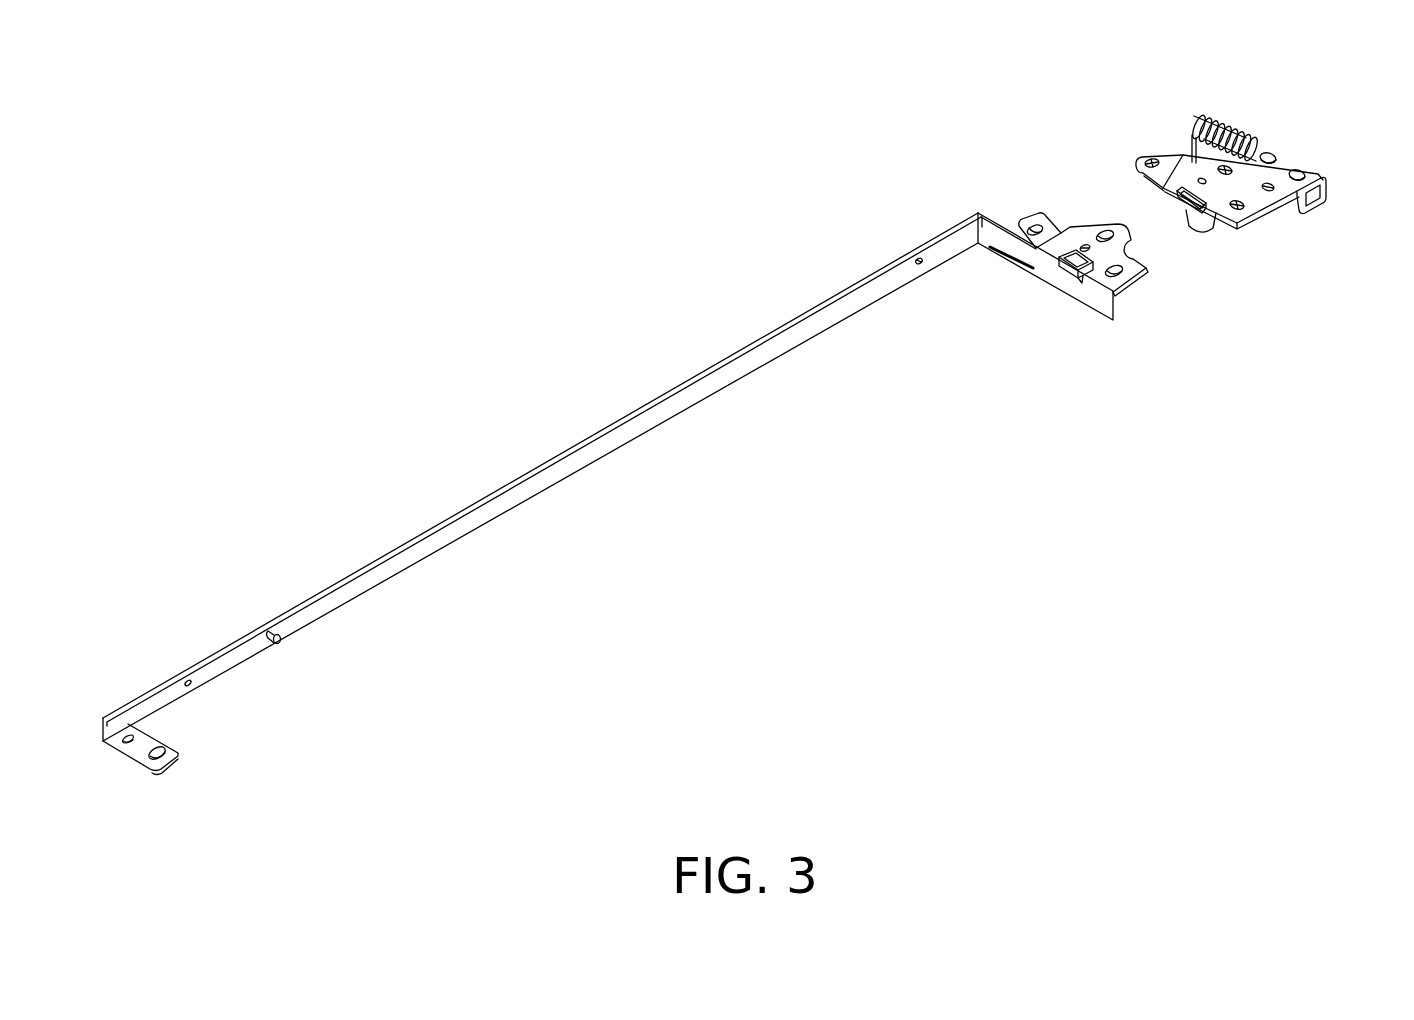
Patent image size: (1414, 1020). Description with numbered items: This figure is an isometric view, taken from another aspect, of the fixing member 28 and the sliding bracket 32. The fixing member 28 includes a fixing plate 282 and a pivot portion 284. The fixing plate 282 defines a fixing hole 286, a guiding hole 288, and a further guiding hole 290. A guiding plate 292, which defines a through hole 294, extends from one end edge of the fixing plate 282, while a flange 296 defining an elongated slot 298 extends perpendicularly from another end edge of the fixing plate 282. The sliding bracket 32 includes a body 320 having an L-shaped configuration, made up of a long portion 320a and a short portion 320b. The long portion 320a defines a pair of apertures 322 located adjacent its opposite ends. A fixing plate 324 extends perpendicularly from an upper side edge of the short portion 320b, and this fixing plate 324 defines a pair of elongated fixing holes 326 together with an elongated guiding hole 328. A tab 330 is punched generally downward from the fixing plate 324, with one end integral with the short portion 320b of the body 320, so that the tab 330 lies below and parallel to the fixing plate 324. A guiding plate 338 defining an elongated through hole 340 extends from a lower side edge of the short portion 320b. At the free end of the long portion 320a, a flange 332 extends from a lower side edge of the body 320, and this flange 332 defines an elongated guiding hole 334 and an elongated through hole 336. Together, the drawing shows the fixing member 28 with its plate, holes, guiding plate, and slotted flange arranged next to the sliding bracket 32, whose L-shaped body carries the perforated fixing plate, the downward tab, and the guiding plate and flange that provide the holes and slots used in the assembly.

The fixing member 28 is at (1320, 157).
The fixing plate 282 is at (1256, 198).
The pivot portion 284 is at (1226, 118).
The fixing hole 286 is at (1238, 203).
The guiding hole 288 is at (1268, 184).
The guiding hole 290 is at (1201, 178).
The guiding plate 292 is at (1158, 156).
The through hole 294 is at (1162, 150).
The flange 296 is at (1231, 238).
The elongated slot 298 is at (1193, 231).
The sliding bracket 32 is at (676, 332).
The body 320 is at (655, 413).
The long portion 320a is at (542, 462).
The short portion 320b is at (1037, 268).
The apertures 322 is at (922, 263).
The fixing plate 324 is at (1128, 243).
The elongated fixing holes 326 is at (1117, 274).
The elongated guiding hole 328 is at (1084, 246).
The tab 330 is at (1073, 271).
The flange 332 is at (147, 742).
The elongated guiding hole 334 is at (122, 743).
The elongated through hole 336 is at (170, 757).
The guiding plate 338 is at (1018, 229).
The elongated through hole 340 is at (1031, 226).